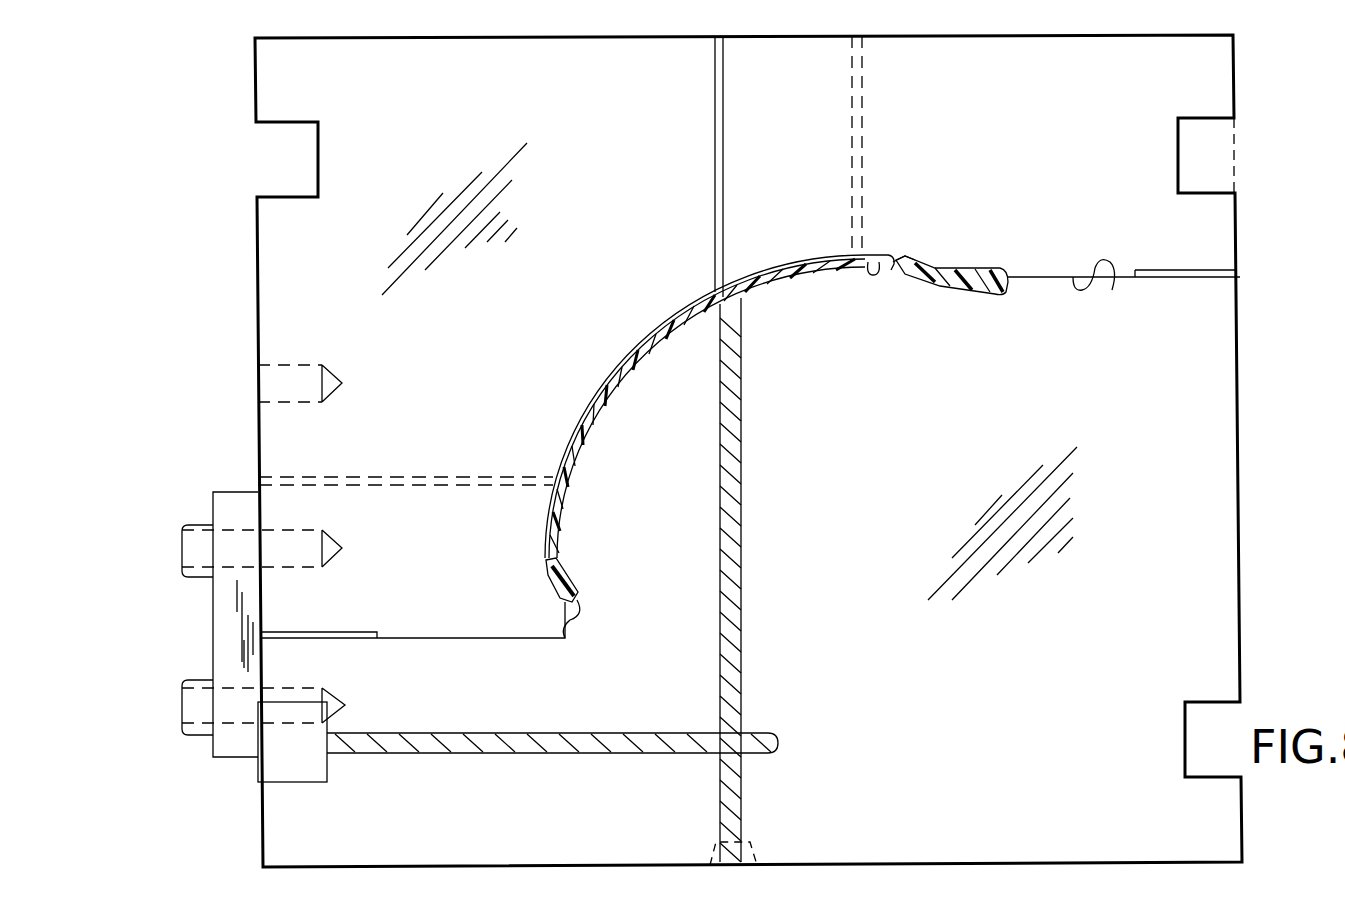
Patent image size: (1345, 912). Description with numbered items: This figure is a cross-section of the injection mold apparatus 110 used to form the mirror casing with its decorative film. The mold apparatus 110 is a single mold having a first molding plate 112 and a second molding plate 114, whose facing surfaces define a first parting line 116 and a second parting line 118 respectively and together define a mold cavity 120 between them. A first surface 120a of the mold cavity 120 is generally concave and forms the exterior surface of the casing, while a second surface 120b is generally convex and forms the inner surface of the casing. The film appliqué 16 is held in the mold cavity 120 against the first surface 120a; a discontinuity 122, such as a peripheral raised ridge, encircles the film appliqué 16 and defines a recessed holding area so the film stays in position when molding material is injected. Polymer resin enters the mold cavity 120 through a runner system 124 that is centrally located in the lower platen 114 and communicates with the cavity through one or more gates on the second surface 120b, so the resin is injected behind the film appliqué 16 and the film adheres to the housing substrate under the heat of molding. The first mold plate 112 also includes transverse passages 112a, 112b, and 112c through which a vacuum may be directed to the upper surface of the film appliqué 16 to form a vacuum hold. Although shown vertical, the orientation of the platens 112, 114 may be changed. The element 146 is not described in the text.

The injection mold apparatus 110 is at (230, 160).
The first molding plate 112 is at (288, 292).
The transverse passage 112a is at (727, 158).
The transverse passage 112b is at (366, 470).
The transverse passage 112c is at (862, 118).
The second molding plate 114 is at (305, 812).
The first parting line 116 is at (1085, 275).
The second parting line 118 is at (1112, 290).
The mold cavity 120 is at (1000, 248).
The first surface of mold cavity 120a is at (880, 262).
The second surface of mold cavity 120b is at (862, 280).
The discontinuity 122 is at (542, 567).
The runner system 124 is at (746, 648).
The film appliqué 16 is at (572, 440).
The bladder wall 146 is at (575, 458).